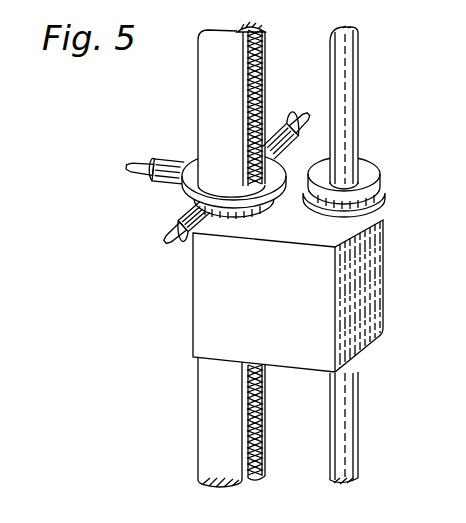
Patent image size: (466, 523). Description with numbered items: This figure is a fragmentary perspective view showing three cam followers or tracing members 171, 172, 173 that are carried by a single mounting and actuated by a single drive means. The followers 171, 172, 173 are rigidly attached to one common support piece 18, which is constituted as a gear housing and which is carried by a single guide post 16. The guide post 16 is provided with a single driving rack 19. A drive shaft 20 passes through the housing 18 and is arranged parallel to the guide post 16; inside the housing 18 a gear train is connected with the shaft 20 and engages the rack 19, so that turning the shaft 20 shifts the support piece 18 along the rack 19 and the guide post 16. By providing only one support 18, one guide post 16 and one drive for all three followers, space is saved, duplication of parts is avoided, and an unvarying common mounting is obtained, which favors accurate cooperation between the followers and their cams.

The guide post 16 is at (211, 81).
The common support piece 18 is at (368, 278).
The driving rack 19 is at (255, 82).
The drive shaft 20 is at (355, 73).
The cam follower 171 is at (294, 114).
The cam follower 172 is at (146, 162).
The cam follower 173 is at (186, 229).